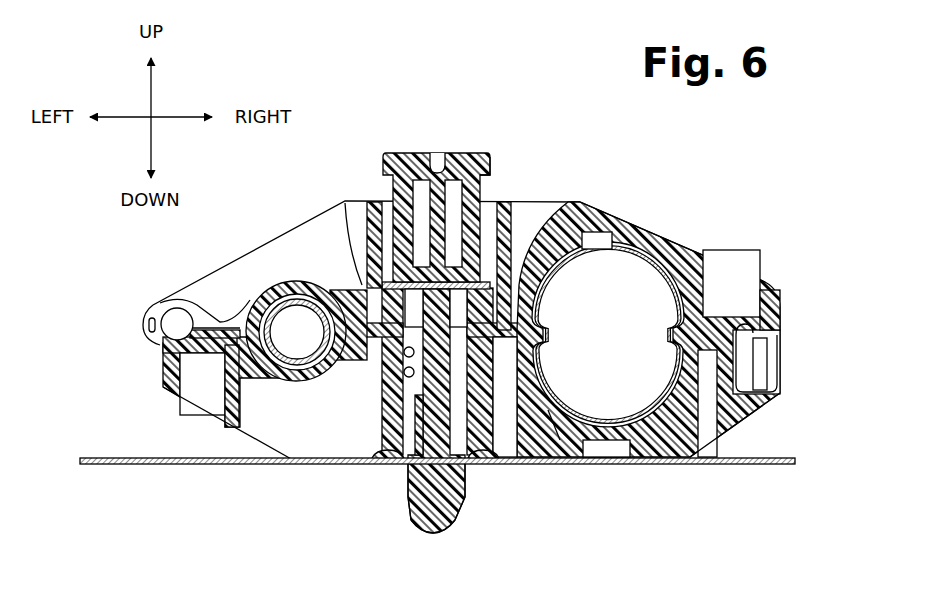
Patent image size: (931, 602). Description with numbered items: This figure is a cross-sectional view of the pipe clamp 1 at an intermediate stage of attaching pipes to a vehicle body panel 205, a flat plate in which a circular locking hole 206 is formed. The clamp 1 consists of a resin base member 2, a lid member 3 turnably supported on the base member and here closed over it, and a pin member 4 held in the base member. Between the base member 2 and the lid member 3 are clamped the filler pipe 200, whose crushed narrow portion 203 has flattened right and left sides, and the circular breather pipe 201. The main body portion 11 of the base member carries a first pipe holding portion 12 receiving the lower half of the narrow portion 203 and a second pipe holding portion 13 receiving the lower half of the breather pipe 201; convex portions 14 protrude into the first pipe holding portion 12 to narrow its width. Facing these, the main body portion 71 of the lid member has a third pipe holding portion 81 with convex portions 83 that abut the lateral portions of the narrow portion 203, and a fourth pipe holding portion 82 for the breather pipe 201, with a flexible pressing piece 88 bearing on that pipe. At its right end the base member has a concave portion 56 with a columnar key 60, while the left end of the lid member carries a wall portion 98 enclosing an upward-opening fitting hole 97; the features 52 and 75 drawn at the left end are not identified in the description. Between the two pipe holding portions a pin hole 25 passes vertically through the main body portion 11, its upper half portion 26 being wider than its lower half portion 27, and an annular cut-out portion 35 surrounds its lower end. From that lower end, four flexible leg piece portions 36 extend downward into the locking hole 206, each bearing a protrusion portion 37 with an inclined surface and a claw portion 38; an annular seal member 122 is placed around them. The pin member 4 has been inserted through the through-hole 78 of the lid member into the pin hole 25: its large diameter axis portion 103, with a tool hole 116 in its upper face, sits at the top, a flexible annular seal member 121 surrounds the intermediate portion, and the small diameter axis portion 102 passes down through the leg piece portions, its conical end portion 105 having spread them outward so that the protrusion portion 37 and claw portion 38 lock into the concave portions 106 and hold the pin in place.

The pipe clamp 1 is at (682, 196).
The base member 2 is at (238, 438).
The lid member 3 is at (268, 225).
The pin member 4 is at (471, 148).
The main body portion 11 is at (216, 395).
The first pipe holding portion 12 is at (556, 415).
The second pipe holding portion 13 is at (300, 380).
The convex portions 14 is at (500, 365).
The pin hole 25 is at (404, 353).
The upper half portion 26 is at (404, 373).
The lower half portion 27 is at (420, 410).
The cut-out portion 35 is at (472, 462).
The leg piece portions 36 is at (412, 508).
The protrusion portion 37 is at (418, 524).
The claw portion 38 is at (408, 499).
The boss 52 is at (170, 328).
The concave portion 56 is at (783, 393).
The columnar key 60 is at (741, 383).
The main body portion 71 is at (213, 292).
The slot 75 is at (160, 320).
The through-hole 78 is at (512, 315).
The third pipe holding portion 81 is at (605, 240).
The fourth pipe holding portion 82 is at (272, 300).
The convex portions 83 is at (692, 300).
The pressing piece 88 is at (316, 283).
The fitting hole 97 is at (781, 356).
The wall portion 98 is at (773, 340).
The small diameter axis portion 102 is at (365, 290).
The large diameter axis portion 103 is at (492, 184).
The end portion 105 is at (433, 531).
The concave portions 106 is at (452, 510).
The tool hole 116 is at (437, 160).
The annular seal member 121 is at (396, 302).
The annular seal member 122 is at (385, 455).
The filler pipe 200 is at (592, 268).
The breather pipe 201 is at (292, 352).
The narrow portion 203 is at (668, 346).
The vehicle body panel 205 is at (275, 466).
The locking hole 206 is at (464, 478).